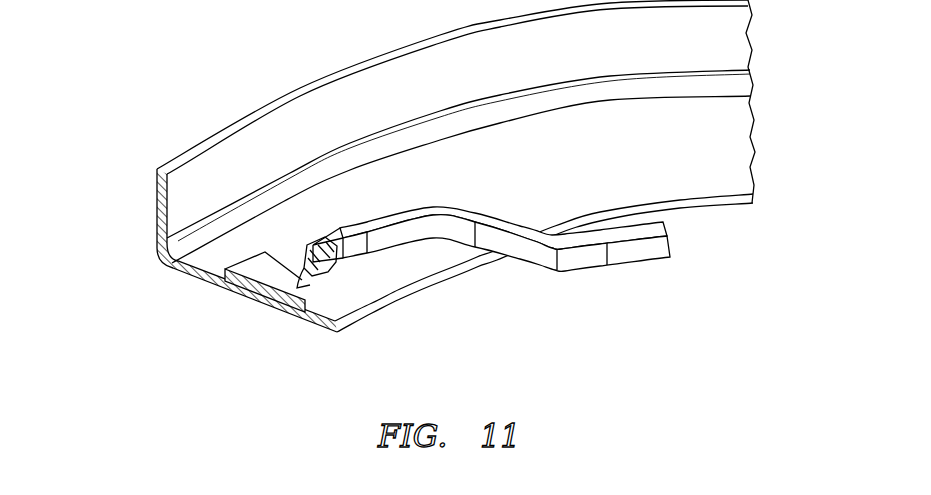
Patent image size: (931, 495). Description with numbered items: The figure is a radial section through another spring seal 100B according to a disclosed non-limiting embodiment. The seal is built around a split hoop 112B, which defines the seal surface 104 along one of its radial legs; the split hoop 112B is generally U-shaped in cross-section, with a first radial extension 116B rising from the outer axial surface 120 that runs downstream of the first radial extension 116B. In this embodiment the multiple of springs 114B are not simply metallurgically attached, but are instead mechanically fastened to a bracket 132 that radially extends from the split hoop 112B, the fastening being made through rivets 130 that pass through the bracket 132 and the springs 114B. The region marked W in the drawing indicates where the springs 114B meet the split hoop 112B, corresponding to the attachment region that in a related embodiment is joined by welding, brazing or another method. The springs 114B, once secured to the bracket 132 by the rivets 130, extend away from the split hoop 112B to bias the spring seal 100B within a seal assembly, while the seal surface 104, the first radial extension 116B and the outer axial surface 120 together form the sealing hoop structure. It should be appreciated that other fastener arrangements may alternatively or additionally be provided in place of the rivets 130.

The spring seal 100B is at (408, 166).
The seal surface 104 is at (150, 211).
The first radial extension 116B is at (225, 128).
The split hoop 112B is at (389, 103).
The outer axial surface 120 is at (599, 171).
The rivets 130 is at (306, 245).
The bracket 132 is at (262, 257).
The springs 114B is at (633, 257).
The metallurgical attachment location W is at (250, 302).